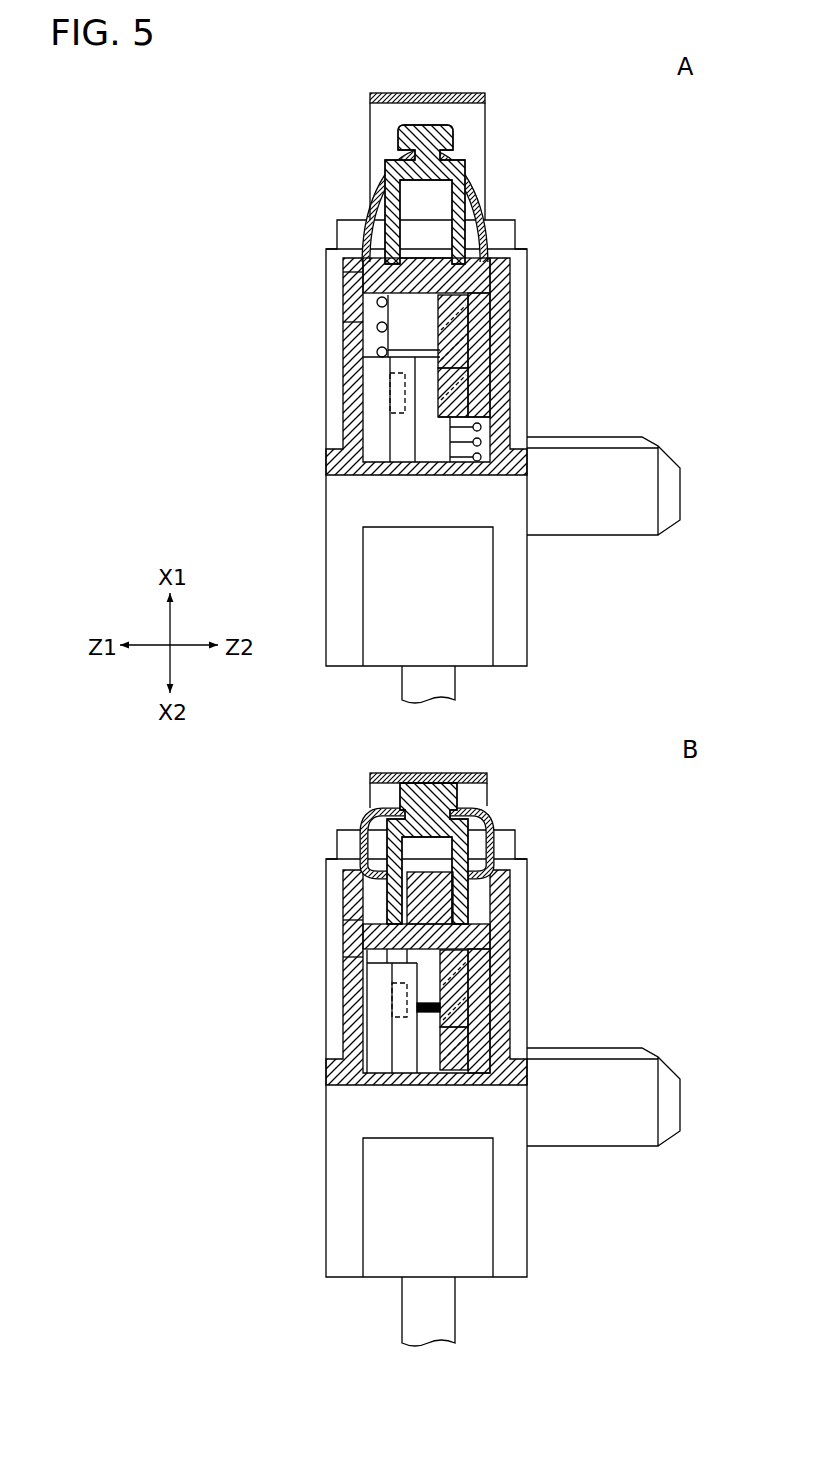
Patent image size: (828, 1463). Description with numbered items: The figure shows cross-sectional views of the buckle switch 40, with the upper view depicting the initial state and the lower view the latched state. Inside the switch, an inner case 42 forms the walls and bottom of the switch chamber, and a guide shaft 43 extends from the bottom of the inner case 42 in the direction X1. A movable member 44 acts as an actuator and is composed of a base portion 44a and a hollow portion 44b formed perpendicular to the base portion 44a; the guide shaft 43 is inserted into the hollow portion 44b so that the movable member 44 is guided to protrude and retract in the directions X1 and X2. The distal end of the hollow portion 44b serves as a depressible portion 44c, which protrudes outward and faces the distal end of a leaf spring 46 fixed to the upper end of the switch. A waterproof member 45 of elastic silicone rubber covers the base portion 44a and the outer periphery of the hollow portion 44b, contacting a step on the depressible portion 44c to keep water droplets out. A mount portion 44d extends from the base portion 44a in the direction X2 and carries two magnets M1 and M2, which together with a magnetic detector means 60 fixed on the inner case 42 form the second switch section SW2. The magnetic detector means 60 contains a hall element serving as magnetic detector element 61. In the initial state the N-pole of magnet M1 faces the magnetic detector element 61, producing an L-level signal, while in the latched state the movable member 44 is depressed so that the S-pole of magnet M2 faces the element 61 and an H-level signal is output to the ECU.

The buckle switch 40 is at (310, 117).
The inner case 42 is at (500, 303).
The guide shaft 43 is at (430, 262).
The movable member 44 is at (414, 580).
The base portion 44a is at (505, 276).
The hollow portion 44b is at (345, 322).
The depressible portion 44c is at (455, 140).
The mount portion 44d is at (486, 327).
The waterproof member 45 is at (489, 195).
The leaf spring 46 is at (485, 93).
The magnetic detector means 60 is at (375, 400).
The magnetic detector element 61 is at (373, 430).
The magnet M1 is at (462, 397).
The magnet M2 is at (462, 349).
The second switch section SW2 is at (435, 446).